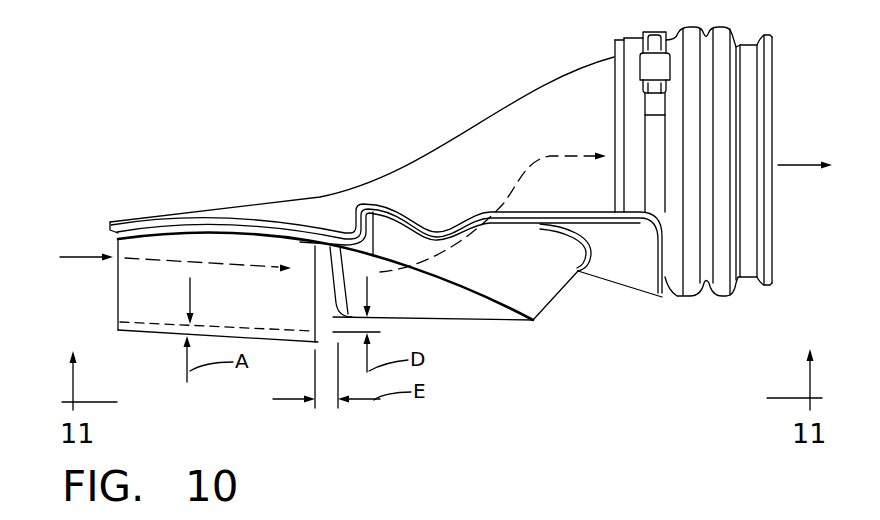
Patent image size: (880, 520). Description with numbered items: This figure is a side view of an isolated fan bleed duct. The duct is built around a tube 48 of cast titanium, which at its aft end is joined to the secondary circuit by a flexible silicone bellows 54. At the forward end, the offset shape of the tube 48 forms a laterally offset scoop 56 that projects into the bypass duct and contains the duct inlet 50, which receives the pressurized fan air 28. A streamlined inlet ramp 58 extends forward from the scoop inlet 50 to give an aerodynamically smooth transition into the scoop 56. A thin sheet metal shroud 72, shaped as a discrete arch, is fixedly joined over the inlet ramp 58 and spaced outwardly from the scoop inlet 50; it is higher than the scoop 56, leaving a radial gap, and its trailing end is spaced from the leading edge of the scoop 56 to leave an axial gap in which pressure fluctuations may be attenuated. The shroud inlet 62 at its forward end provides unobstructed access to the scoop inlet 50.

The tube 48 is at (535, 92).
The inlet ramp 58 is at (118, 222).
The pressurized fan air 28 is at (68, 258).
The shroud inlet 62 is at (117, 312).
The shroud 72 is at (155, 345).
The duct inlet 50 is at (333, 283).
The scoop 56 is at (476, 322).
The flexible silicone bellows 54 is at (693, 297).